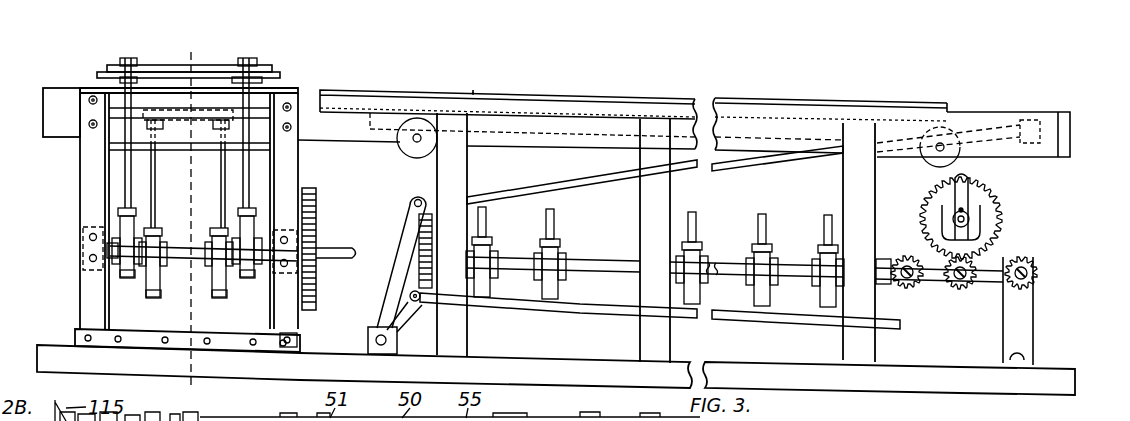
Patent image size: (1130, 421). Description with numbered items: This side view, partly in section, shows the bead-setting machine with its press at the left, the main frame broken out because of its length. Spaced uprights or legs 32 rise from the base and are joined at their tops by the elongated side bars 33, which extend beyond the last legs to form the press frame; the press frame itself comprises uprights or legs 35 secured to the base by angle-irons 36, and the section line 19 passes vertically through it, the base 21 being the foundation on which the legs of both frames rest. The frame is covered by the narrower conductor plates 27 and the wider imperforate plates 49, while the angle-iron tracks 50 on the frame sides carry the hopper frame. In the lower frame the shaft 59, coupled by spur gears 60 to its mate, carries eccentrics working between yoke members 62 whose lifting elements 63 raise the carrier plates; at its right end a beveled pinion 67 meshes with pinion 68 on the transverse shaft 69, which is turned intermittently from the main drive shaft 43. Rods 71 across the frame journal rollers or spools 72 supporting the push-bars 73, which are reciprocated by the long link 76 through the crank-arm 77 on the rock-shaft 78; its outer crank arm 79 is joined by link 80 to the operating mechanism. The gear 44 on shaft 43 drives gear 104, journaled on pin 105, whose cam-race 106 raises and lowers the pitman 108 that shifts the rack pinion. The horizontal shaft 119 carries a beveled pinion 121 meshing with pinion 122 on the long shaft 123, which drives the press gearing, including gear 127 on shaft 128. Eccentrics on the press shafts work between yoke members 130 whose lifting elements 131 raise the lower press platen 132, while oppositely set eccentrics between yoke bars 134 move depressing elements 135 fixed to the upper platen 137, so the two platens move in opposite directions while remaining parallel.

The section line 19 is at (189, 218).
The base 21 is at (44, 366).
The conductor plates 27 is at (518, 95).
The uprights or legs 32 is at (466, 176).
The side bars 33 is at (318, 118).
The uprights or legs 35 is at (87, 202).
The angle-irons 36 is at (259, 347).
The shaft 43 is at (961, 291).
The gear 44 is at (975, 286).
The plates 49 is at (648, 98).
The angle-iron tracks 50 is at (352, 108).
The shaft 59 is at (600, 263).
The spur gears 60 is at (420, 270).
The yoke members 62 is at (712, 298).
The lifting elements 63 is at (546, 221).
The beveled pinion 67 is at (895, 258).
The pinion 68 is at (902, 290).
The shaft 69 is at (912, 290).
The rods 71 is at (410, 141).
The rollers or spools 72 is at (416, 156).
The push-bars 73 is at (575, 128).
The link 76 is at (726, 172).
The crank-arm 77 is at (413, 225).
The rock-shaft 78 is at (368, 340).
The crank arm 79 is at (405, 313).
The link 80 is at (603, 310).
The gear 104 is at (988, 211).
The pin 105 is at (968, 219).
The cam-race 106 is at (938, 214).
The pitman 108 is at (968, 180).
The shaft 119 is at (1040, 270).
The beveled pinion 121 is at (1036, 283).
The pinion 122 is at (1010, 257).
The shaft 123 is at (336, 262).
The gear 127 is at (318, 193).
The shaft 128 is at (178, 262).
The yoke members 130 is at (147, 287).
The lifting elements 131 is at (222, 190).
The lower press platen 132 is at (125, 125).
The yoke bars 134 is at (118, 264).
The depressing elements 135 is at (246, 172).
The upper platen 137 is at (218, 69).